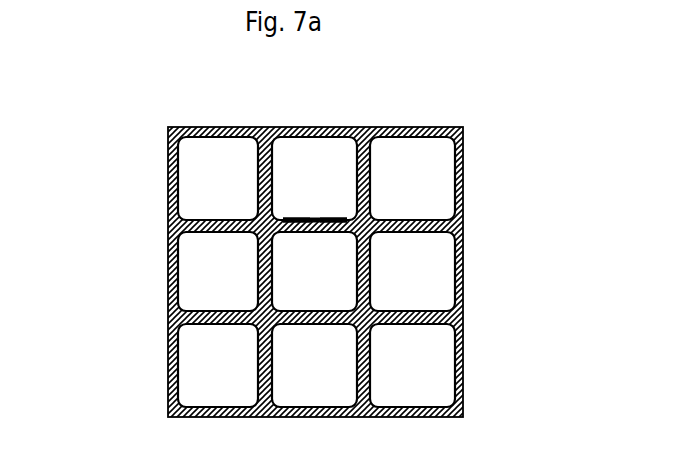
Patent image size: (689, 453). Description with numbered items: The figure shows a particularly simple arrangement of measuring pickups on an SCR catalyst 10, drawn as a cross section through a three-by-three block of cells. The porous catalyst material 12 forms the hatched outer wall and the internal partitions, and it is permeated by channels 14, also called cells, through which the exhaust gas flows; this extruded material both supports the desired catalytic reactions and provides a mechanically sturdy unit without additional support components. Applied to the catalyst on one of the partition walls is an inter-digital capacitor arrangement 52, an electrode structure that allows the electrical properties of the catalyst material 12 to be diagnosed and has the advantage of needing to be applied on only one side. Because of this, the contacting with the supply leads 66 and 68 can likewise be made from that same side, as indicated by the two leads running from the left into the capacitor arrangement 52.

The SCR catalyst 10 is at (533, 92).
The porous catalyst material 12 is at (463, 134).
The channel 14 is at (408, 335).
The inter-digital capacitor arrangement 52 is at (312, 219).
The supply lead 66 is at (287, 218).
The supply lead 68 is at (338, 218).